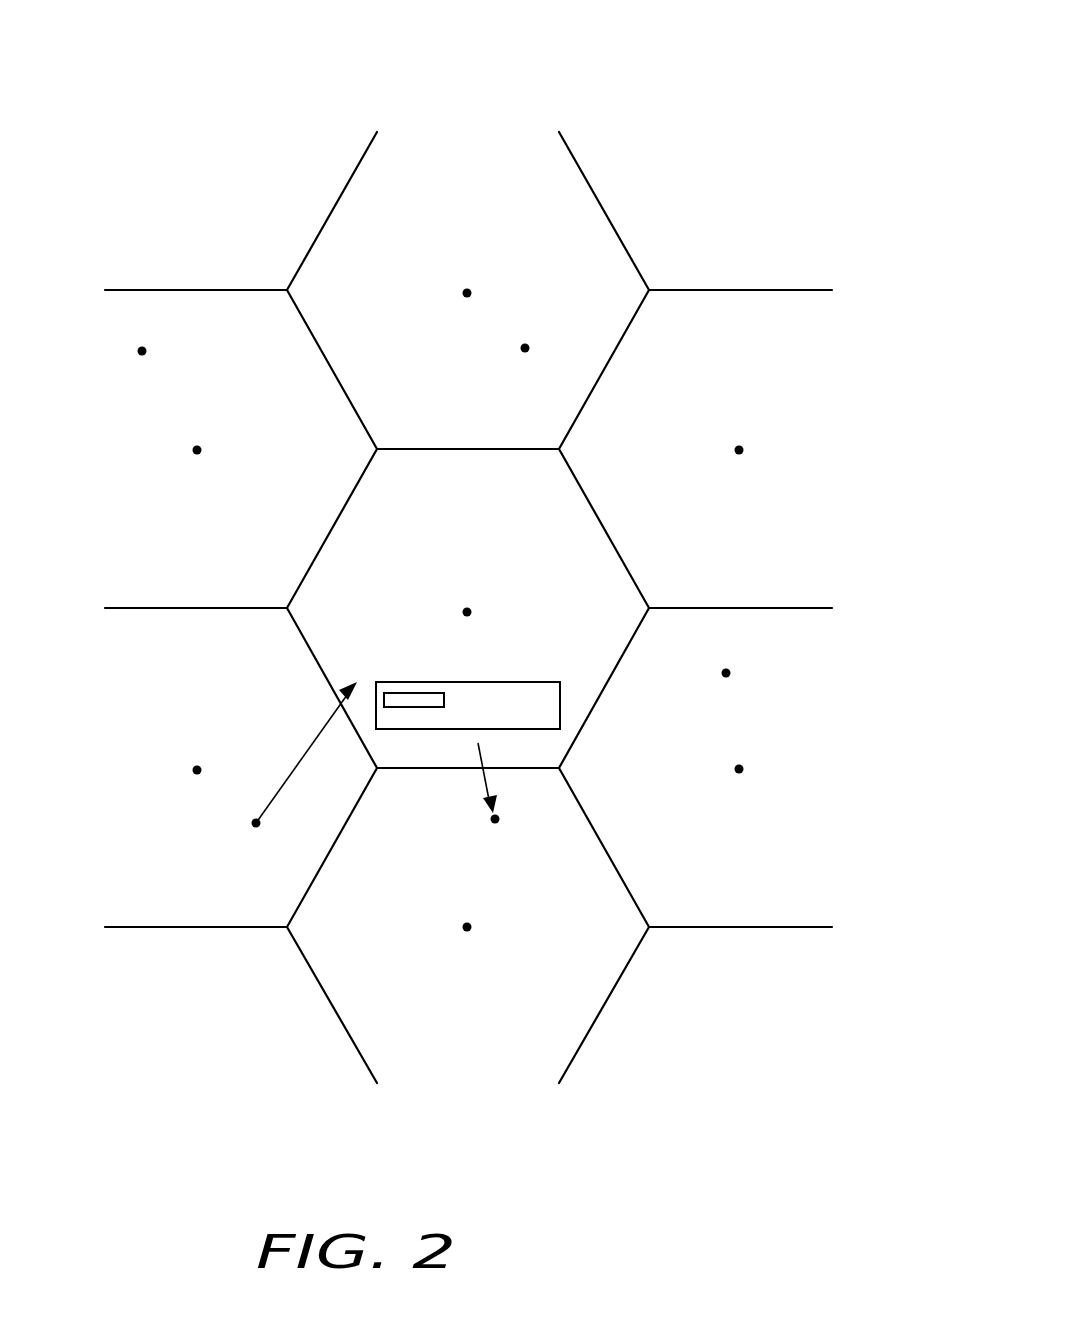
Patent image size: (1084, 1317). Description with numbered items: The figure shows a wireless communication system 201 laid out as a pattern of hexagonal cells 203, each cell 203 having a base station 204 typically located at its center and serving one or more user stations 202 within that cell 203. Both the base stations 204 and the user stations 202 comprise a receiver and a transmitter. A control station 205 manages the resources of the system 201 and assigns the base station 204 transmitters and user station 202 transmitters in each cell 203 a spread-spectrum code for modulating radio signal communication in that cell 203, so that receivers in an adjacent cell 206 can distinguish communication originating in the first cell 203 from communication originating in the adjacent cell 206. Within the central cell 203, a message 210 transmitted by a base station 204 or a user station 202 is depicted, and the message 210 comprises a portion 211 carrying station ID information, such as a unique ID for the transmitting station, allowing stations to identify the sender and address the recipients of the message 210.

The wireless communication system 201 is at (628, 108).
The user station 202 is at (557, 312).
The cell 203 is at (544, 176).
The base station 204 is at (771, 412).
The control station 205 is at (142, 351).
The adjacent cell 206 is at (348, 981).
The message 210 is at (524, 682).
The portion 211 is at (410, 693).